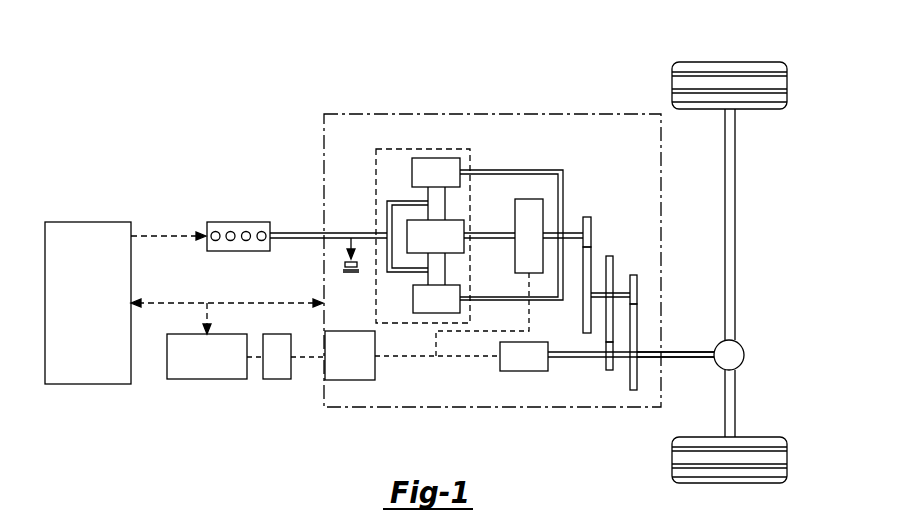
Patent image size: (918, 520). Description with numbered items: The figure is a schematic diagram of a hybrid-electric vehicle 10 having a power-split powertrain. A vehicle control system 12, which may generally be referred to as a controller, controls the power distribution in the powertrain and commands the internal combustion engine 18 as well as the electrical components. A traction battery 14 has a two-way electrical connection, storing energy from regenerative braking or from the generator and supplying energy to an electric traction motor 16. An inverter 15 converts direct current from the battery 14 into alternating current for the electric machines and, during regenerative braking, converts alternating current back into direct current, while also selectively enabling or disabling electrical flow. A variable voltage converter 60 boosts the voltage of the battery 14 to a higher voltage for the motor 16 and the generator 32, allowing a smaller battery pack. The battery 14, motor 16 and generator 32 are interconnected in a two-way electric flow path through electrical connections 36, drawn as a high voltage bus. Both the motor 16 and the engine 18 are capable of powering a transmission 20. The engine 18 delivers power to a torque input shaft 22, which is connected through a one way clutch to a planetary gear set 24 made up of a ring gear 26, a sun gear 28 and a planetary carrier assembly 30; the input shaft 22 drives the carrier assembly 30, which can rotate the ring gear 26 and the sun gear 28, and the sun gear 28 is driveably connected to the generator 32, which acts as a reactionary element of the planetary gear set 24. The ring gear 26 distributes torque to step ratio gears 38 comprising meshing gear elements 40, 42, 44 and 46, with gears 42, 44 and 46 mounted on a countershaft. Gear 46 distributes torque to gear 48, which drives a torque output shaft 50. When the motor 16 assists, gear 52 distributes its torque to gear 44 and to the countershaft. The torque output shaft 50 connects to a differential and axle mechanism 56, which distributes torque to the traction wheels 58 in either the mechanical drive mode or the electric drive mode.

The hybrid-electric vehicle 10 is at (270, 98).
The vehicle control system 12 is at (88, 384).
The traction battery 14 is at (207, 379).
The inverter 15 is at (325, 367).
The electric traction motor 16 is at (526, 371).
The internal combustion engine 18 is at (208, 224).
The transmission 20 is at (584, 113).
The torque input shaft 22 is at (297, 233).
The planetary gear set 24 is at (470, 153).
The ring gear 26 is at (412, 177).
The sun gear 28 is at (455, 253).
The planetary carrier assembly 30 is at (387, 222).
The generator 32 is at (543, 207).
The electrical connections 36 is at (376, 360).
The step ratio gears 38 is at (626, 304).
The gear element 40 is at (591, 230).
The gear element 42 is at (583, 320).
The gear element 44 is at (613, 265).
The gear element 46 is at (637, 293).
The gear 48 is at (637, 328).
The torque output shaft 50 is at (682, 360).
The gear 52 is at (612, 371).
The differential and axle mechanism 56 is at (744, 355).
The traction wheels 58 is at (730, 62).
The variable voltage converter 60 is at (277, 334).